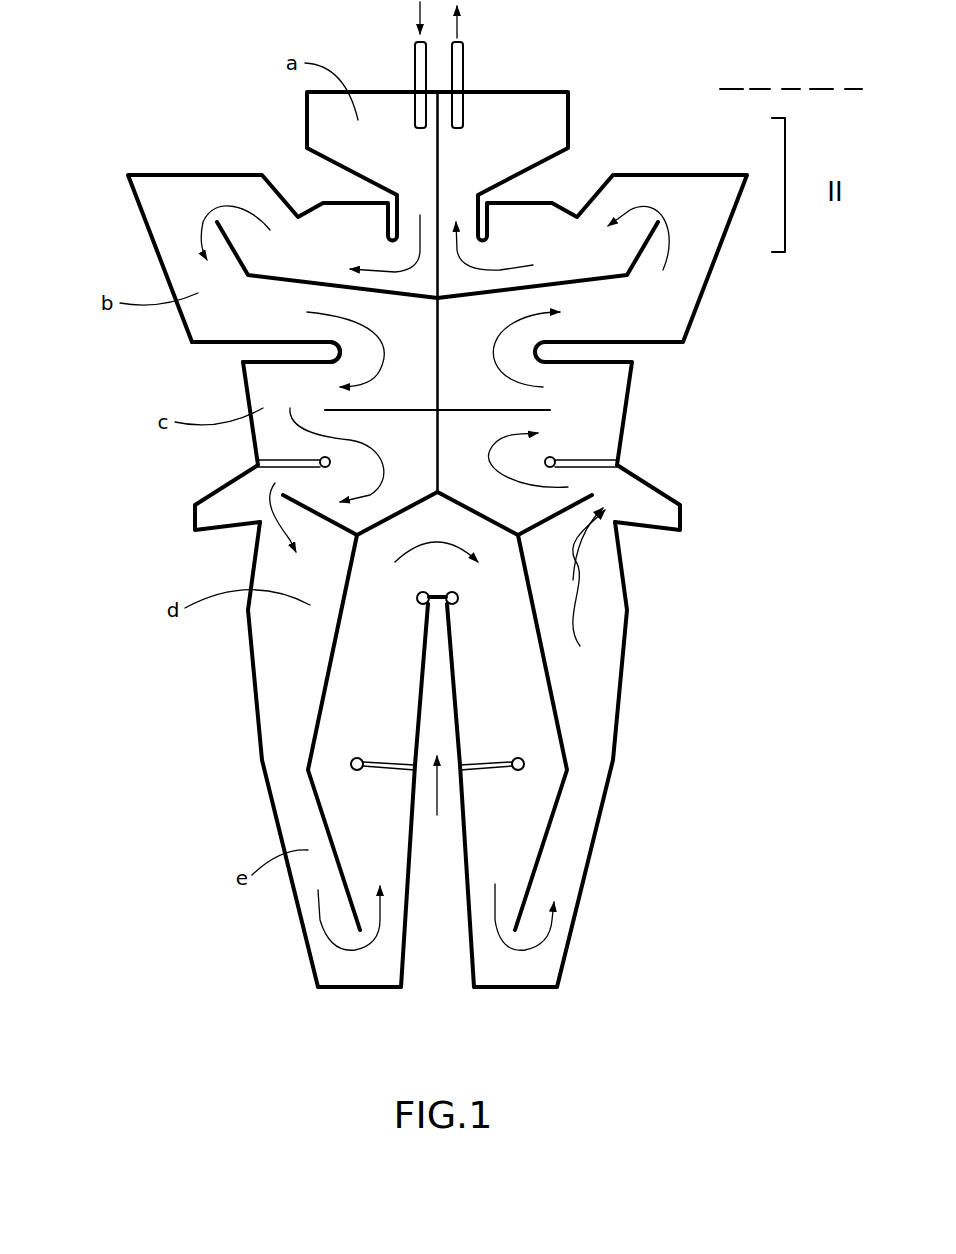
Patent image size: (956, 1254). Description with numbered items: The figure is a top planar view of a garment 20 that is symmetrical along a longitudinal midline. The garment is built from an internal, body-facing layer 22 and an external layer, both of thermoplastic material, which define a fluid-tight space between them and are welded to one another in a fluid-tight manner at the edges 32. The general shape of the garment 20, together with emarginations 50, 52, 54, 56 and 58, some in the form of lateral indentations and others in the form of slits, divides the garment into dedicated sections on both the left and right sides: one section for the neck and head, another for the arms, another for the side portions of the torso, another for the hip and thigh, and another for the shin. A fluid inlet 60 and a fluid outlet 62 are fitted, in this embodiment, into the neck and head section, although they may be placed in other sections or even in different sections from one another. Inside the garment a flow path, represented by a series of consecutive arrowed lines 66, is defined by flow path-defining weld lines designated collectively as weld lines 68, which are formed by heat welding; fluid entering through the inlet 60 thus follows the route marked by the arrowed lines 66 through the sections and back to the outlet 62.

The garment 20 is at (200, 738).
The internal body-facing layer 22 is at (510, 681).
The edges 32 is at (250, 632).
The emargination 50 is at (392, 236).
The emargination 52 is at (268, 353).
The emargination 54 is at (323, 457).
The emargination 56 is at (378, 770).
The emargination 58 is at (442, 800).
The fluid inlet 60 is at (415, 70).
The fluid outlet 62 is at (463, 70).
The arrowed lines 66 is at (200, 213).
The flow path-defining weld lines 68 is at (438, 355).